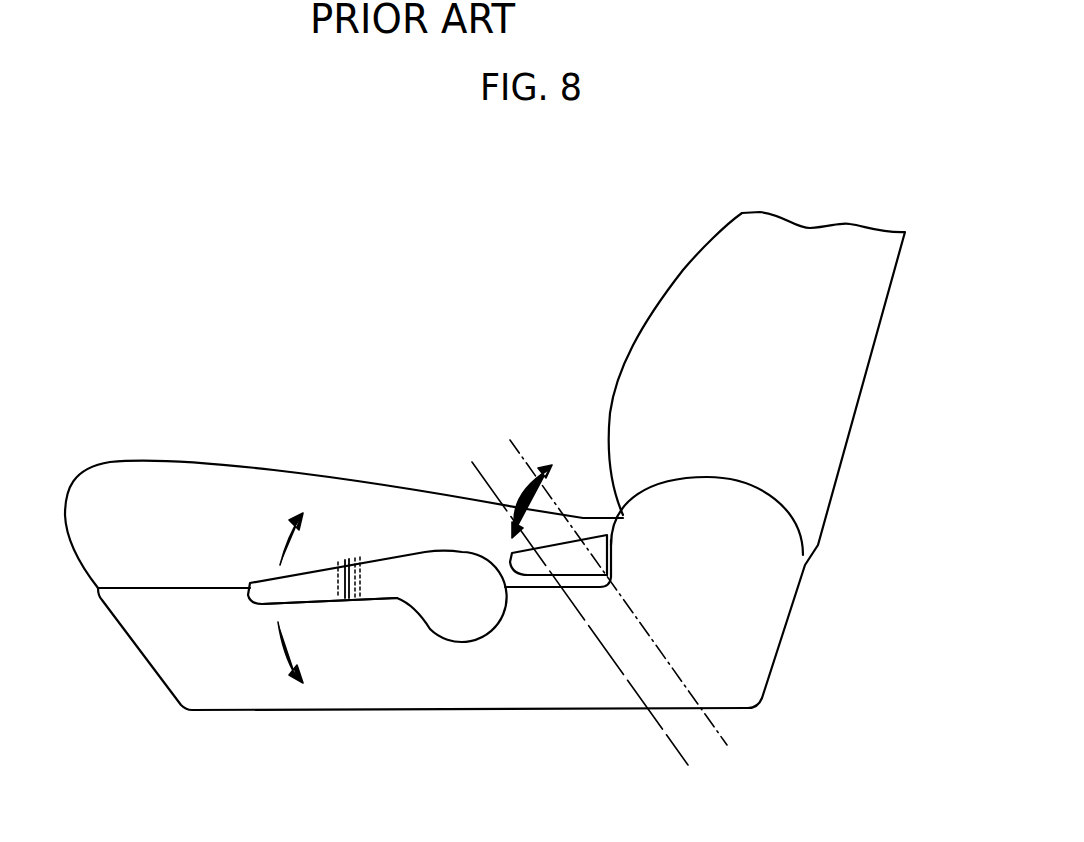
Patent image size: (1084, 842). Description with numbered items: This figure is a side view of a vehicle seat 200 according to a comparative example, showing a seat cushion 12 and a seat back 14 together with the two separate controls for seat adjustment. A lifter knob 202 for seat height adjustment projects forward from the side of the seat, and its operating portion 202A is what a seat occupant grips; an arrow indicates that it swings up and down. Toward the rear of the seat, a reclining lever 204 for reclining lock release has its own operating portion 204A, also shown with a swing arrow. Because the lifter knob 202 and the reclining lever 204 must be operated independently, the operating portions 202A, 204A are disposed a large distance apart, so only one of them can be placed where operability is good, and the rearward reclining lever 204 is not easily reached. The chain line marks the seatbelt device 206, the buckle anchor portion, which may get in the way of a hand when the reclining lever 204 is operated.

The vehicle seat 200 is at (452, 237).
The seat cushion 12 is at (240, 482).
The seat back 14 is at (695, 283).
The lifter knob 202 is at (380, 545).
The operating portion 202A is at (315, 592).
The reclining lever 204 is at (599, 518).
The operating portion 204A is at (528, 575).
The seatbelt device 206 is at (632, 665).